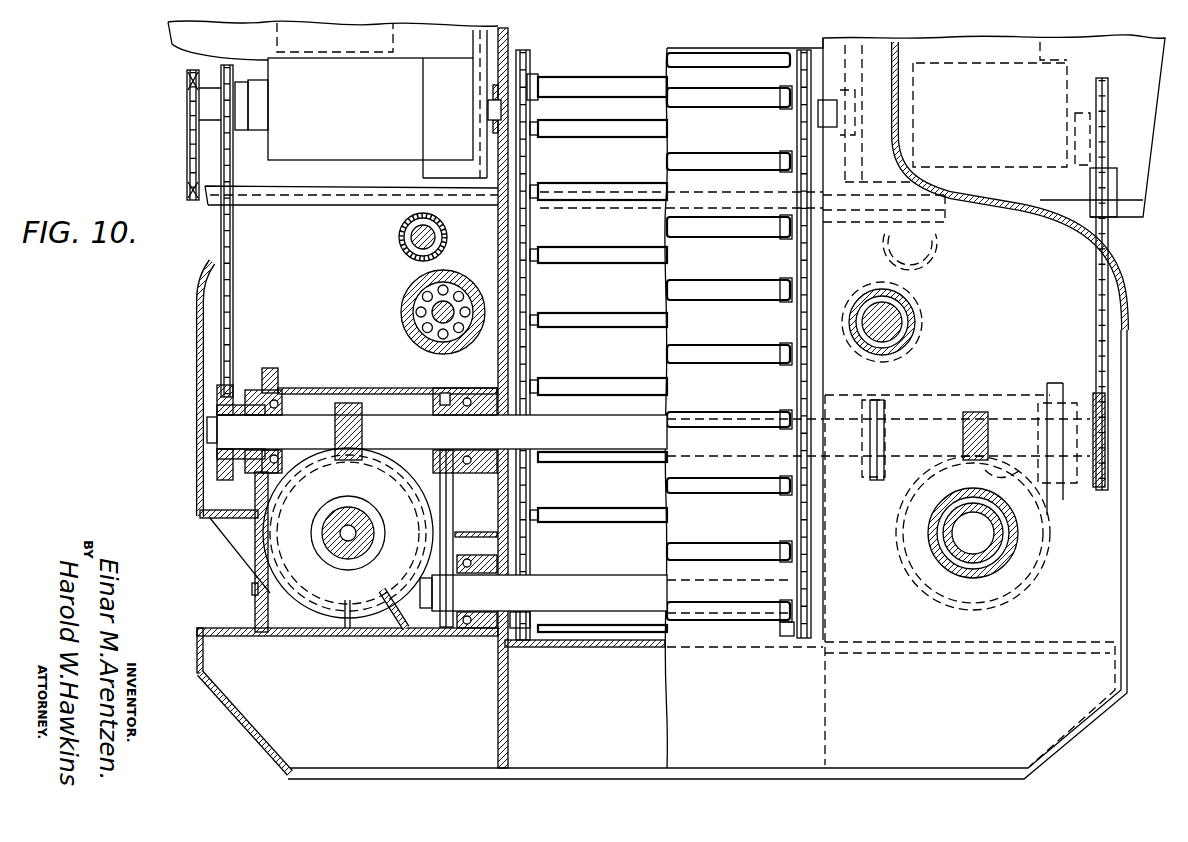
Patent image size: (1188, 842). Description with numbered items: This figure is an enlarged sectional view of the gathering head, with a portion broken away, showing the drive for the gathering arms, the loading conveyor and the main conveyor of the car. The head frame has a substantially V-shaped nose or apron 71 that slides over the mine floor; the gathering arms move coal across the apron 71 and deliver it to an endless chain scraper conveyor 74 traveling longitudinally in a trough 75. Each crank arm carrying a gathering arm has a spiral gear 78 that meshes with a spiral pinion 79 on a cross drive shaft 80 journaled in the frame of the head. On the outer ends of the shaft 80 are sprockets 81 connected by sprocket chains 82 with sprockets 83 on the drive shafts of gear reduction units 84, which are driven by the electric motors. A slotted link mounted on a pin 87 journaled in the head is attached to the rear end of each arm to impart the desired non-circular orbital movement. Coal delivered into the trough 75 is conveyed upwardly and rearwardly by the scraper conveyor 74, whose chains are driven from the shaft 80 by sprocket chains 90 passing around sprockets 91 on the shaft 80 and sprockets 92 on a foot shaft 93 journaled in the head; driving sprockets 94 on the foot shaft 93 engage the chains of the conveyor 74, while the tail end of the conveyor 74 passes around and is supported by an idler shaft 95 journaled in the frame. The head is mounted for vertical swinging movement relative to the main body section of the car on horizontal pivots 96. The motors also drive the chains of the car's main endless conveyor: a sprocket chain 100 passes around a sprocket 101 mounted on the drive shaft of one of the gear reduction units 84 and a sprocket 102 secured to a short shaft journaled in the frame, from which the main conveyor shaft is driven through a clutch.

The apron 71 is at (852, 401).
The endless chain scraper conveyor 74 is at (533, 490).
The trough 75 is at (729, 337).
The spiral gear 78 is at (323, 458).
The spiral pinion 79 is at (345, 403).
The cross drive shaft 80 is at (384, 422).
The sprocket 81 is at (215, 450).
The sprocket chain 82 is at (228, 229).
The sprocket 83 is at (236, 92).
The gear reduction unit 84 is at (370, 109).
The pin 87 is at (405, 313).
The sprocket chain 90 is at (445, 505).
The sprocket 91 is at (440, 397).
The sprocket 92 is at (445, 622).
The foot shaft 93 is at (563, 608).
The driving sprocket 94 is at (528, 633).
The idler shaft 95 is at (577, 85).
The horizontal pivot 96 is at (505, 102).
The sprocket chain 100 is at (187, 140).
The sprocket 101 is at (191, 87).
The sprocket 102 is at (188, 197).